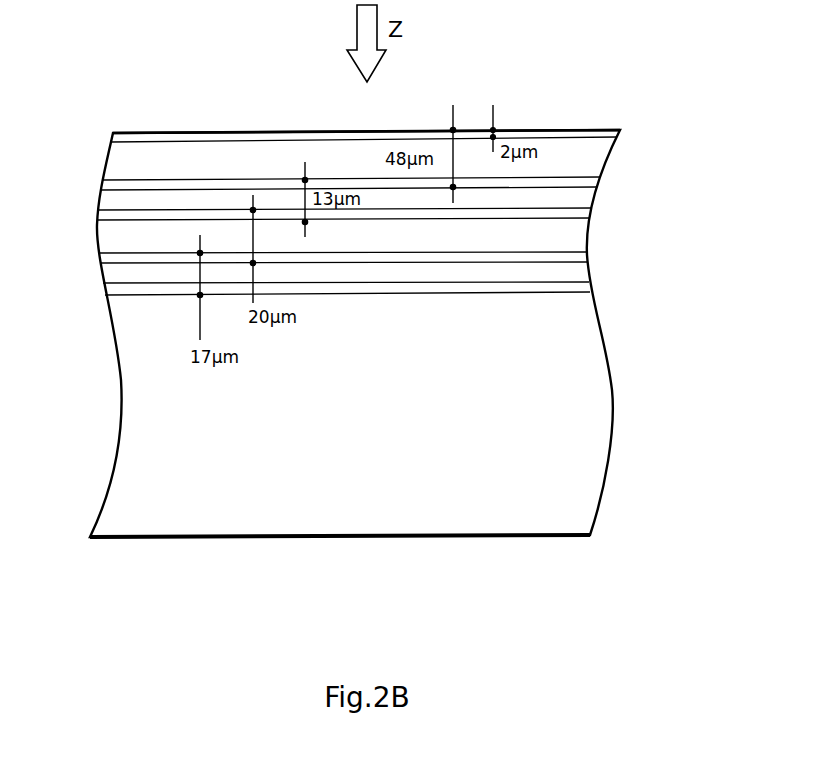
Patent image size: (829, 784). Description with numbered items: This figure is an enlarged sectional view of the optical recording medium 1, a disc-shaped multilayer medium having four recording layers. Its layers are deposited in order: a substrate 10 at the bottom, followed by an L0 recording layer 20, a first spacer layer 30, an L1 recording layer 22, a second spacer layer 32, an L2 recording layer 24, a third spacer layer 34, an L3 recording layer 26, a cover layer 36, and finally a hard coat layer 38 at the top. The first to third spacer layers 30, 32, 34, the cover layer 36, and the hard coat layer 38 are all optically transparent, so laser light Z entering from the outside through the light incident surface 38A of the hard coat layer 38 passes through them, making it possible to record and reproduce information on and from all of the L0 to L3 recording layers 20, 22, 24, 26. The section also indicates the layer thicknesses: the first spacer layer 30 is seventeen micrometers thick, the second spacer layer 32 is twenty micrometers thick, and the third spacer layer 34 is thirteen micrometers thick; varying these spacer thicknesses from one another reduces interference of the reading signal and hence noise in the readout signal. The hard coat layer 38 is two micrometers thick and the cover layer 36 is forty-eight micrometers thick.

The optical recording medium 1 is at (602, 97).
The substrate 10 is at (600, 448).
The L0 recording layer 20 is at (586, 288).
The L1 recording layer 22 is at (583, 254).
The L2 recording layer 24 is at (585, 213).
The L3 recording layer 26 is at (590, 181).
The first spacer layer 30 is at (112, 276).
The second spacer layer 32 is at (105, 235).
The third spacer layer 34 is at (110, 197).
The cover layer 36 is at (117, 165).
The hard coat layer 38 is at (113, 136).
The light incident surface 38A is at (160, 132).